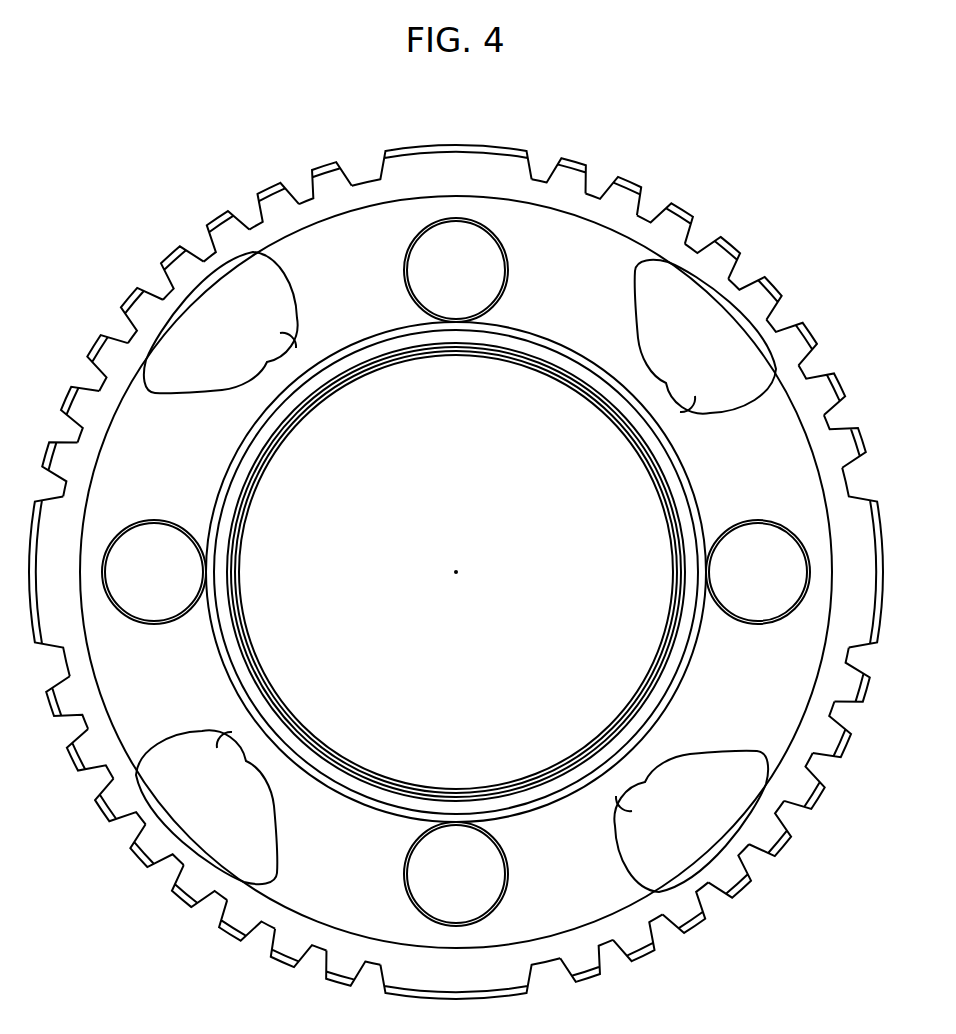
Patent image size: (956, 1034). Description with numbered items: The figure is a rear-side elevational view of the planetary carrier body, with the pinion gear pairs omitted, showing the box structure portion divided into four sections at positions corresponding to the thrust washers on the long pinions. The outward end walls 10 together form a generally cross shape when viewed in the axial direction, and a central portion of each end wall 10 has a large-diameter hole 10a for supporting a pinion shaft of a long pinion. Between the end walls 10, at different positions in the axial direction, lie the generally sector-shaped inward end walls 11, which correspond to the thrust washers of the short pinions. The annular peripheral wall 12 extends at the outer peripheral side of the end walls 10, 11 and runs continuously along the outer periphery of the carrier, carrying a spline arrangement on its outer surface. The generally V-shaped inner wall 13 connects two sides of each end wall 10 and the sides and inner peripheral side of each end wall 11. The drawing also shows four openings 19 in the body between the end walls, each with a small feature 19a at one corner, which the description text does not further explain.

The end wall 10 is at (528, 300).
The large-diameter hole 10a is at (427, 284).
The end wall 11 is at (742, 292).
The annular peripheral wall 12 is at (283, 377).
The inner wall 13 is at (243, 470).
The opening 19 is at (198, 345).
The recess 19a is at (298, 330).